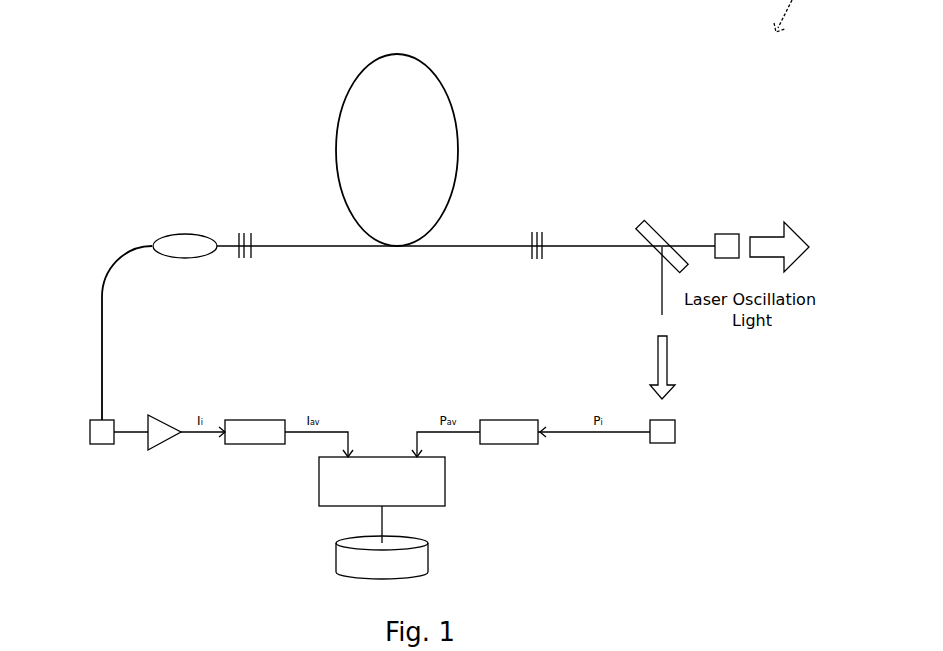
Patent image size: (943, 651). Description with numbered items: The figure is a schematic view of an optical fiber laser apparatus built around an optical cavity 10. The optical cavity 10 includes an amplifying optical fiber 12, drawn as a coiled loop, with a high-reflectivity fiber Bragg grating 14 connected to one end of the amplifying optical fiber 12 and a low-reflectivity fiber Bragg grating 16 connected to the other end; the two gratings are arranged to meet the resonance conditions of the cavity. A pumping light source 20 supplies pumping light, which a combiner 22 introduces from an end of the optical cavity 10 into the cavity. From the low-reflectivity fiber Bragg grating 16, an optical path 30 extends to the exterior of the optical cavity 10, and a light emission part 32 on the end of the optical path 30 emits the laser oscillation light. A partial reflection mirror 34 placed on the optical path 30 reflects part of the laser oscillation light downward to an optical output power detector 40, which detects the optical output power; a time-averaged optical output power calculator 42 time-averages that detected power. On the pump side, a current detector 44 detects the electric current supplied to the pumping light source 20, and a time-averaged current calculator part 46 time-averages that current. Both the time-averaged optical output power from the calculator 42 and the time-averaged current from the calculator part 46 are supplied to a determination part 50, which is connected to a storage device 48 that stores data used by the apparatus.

The optical cavity 10 is at (595, 64).
The amplifying optical fiber 12 is at (443, 80).
The high-reflectivity fiber Bragg grating 14 is at (242, 220).
The low-reflectivity fiber Bragg grating 16 is at (540, 215).
The pumping light source 20 is at (88, 431).
The combiner 22 is at (183, 233).
The optical path 30 is at (605, 250).
The light emission part 32 is at (725, 233).
The partial reflection mirror 34 is at (662, 230).
The optical output power detector 40 is at (662, 445).
The time-averaged optical output power calculator 42 is at (508, 446).
The current detector 44 is at (160, 446).
The time-averaged current calculator part 46 is at (255, 446).
The storage device 48 is at (430, 555).
The determination part 50 is at (318, 497).